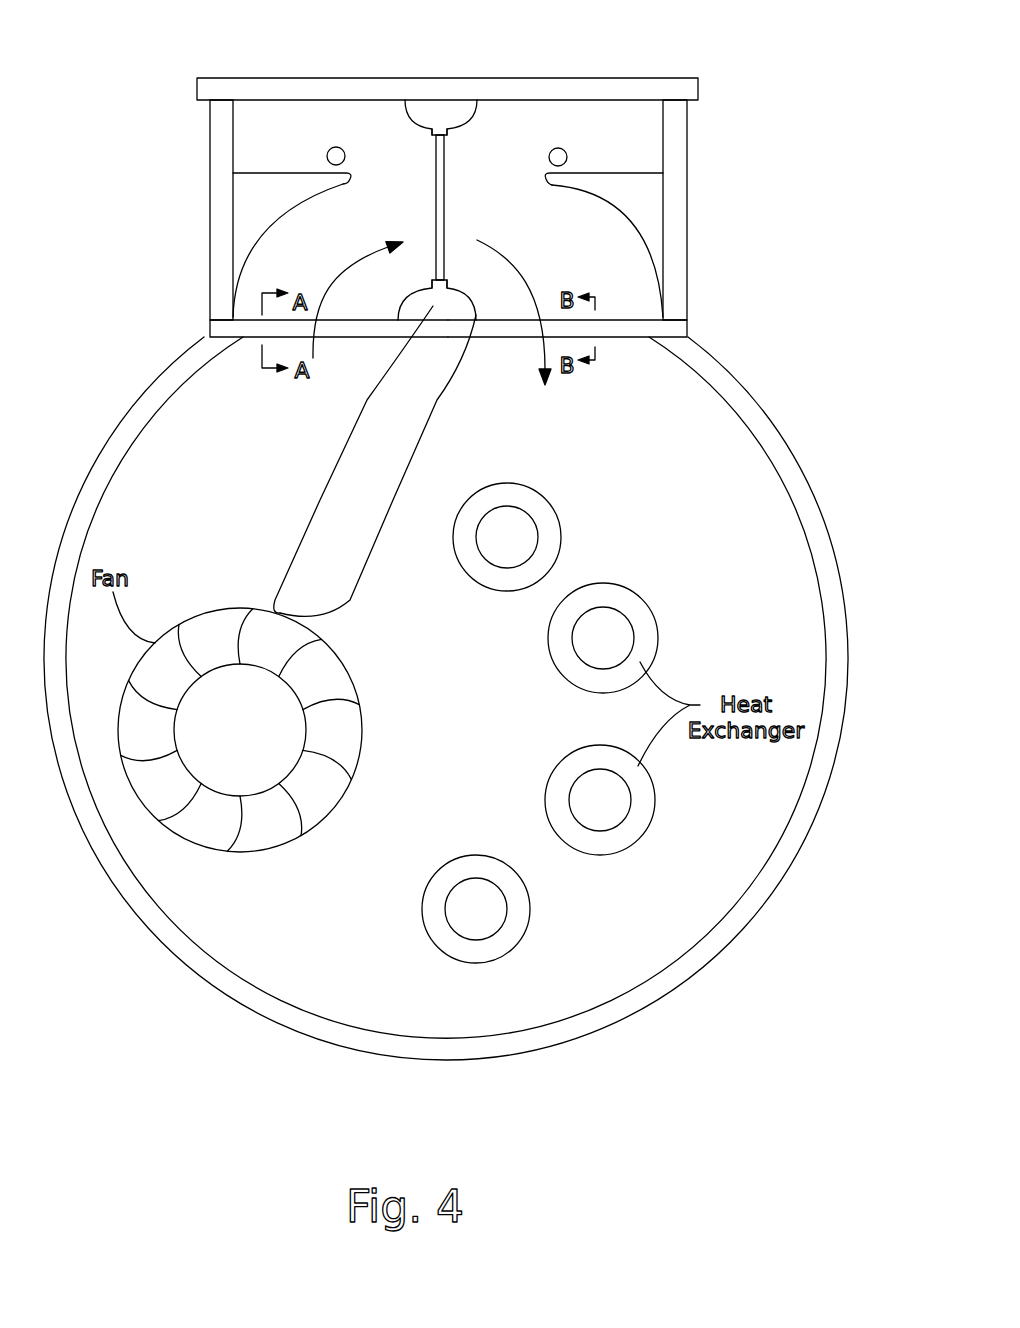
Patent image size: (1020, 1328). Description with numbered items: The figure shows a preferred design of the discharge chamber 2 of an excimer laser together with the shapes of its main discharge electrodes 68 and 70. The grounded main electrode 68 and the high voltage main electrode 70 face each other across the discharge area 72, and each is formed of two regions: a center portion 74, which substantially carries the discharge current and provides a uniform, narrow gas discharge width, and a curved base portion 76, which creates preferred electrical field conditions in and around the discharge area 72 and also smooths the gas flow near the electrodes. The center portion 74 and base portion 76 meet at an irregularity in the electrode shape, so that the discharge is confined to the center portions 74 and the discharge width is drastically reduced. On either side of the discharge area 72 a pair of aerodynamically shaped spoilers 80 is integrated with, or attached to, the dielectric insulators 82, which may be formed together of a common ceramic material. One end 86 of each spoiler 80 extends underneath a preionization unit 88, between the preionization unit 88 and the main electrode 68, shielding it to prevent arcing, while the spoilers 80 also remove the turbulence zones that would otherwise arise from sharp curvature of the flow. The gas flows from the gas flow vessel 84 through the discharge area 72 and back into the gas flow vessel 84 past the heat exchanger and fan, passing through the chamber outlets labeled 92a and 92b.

The discharge chamber 2 is at (615, 67).
The main discharge electrode 68 is at (397, 353).
The high voltage main electrode 70 is at (428, 112).
The discharge area 72 is at (445, 217).
The center portion 74 is at (433, 131).
The base portion 76 is at (472, 117).
The spoiler 80 is at (250, 212).
The dielectric insulator 82 is at (208, 196).
The gas flow vessel 84 is at (778, 393).
The end of spoiler 86 is at (338, 185).
The preionization unit 88 is at (332, 148).
The left outlet 92a is at (228, 333).
The right outlet 92b is at (653, 328).